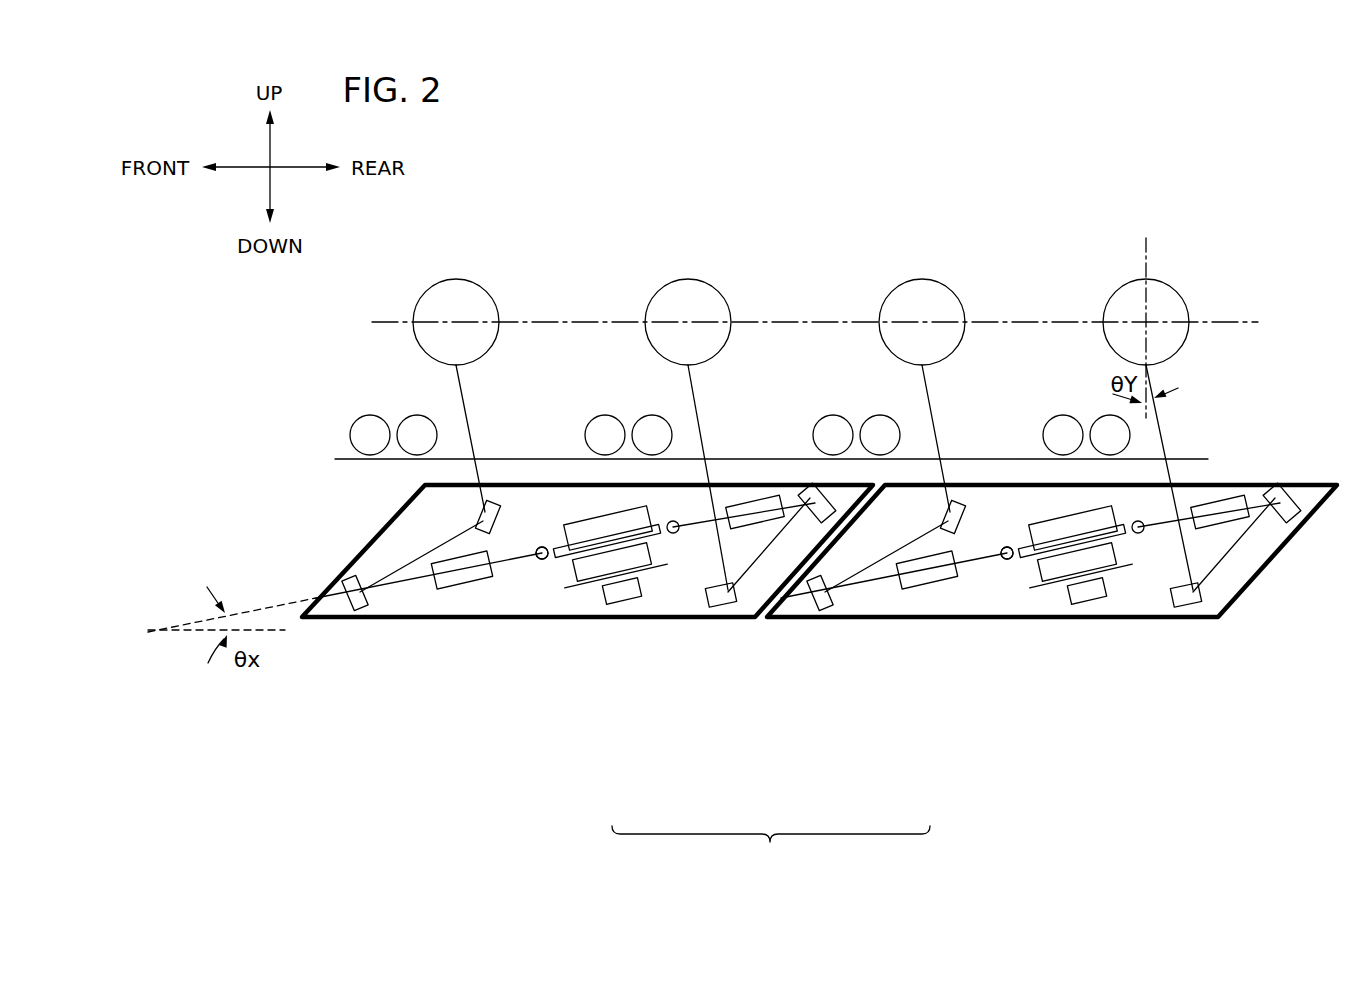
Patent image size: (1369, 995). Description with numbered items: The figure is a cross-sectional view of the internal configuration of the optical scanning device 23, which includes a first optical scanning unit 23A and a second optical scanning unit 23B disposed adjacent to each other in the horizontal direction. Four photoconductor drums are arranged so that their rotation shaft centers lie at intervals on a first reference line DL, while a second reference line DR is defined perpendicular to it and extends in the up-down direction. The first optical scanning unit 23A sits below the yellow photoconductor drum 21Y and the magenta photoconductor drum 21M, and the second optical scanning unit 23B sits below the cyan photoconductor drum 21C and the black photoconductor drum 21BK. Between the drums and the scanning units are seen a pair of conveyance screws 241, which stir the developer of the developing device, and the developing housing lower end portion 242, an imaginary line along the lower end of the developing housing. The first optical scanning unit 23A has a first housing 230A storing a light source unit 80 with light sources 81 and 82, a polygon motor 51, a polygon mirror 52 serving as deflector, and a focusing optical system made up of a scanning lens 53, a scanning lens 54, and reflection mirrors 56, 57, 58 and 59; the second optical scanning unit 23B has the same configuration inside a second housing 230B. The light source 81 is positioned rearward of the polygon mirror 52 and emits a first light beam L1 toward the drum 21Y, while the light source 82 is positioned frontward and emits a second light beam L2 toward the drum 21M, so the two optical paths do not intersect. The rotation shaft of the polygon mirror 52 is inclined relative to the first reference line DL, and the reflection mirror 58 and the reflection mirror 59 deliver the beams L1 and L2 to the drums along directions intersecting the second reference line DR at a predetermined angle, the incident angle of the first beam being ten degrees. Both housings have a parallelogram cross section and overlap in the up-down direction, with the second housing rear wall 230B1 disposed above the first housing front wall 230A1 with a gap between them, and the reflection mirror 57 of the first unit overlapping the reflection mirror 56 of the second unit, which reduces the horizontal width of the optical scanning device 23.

The black photoconductor drum 21BK is at (449, 280).
The cyan photoconductor drum 21C is at (686, 280).
The magenta photoconductor drum 21M is at (920, 280).
The yellow photoconductor drum 21Y is at (1163, 281).
The optical scanning device 23 is at (771, 848).
The first optical scanning unit 23A is at (924, 737).
The second optical scanning unit 23B is at (616, 737).
The first housing 230A is at (1250, 584).
The second housing 230B is at (388, 526).
The first housing front wall 230A1 is at (805, 595).
The second housing rear wall 230B1 is at (755, 597).
The pair of conveyance screws 241 is at (415, 415).
The developing housing lower end portion 242 is at (340, 458).
The polygon motor 51 is at (588, 605).
The polygon mirror 52 is at (558, 558).
The scanning lens 53 is at (746, 500).
The scanning lens 54 is at (457, 585).
The reflection mirror 56 is at (806, 493).
The reflection mirror 57 is at (361, 612).
The reflection mirror 58 is at (710, 594).
The reflection mirror 59 is at (493, 505).
The light source unit 80 is at (839, 540).
The light source 81 is at (672, 540).
The light source 82 is at (545, 548).
The first light beam L1 is at (702, 413).
The second light beam L2 is at (468, 413).
The first reference line DL is at (1218, 320).
The second reference line DR is at (1148, 252).